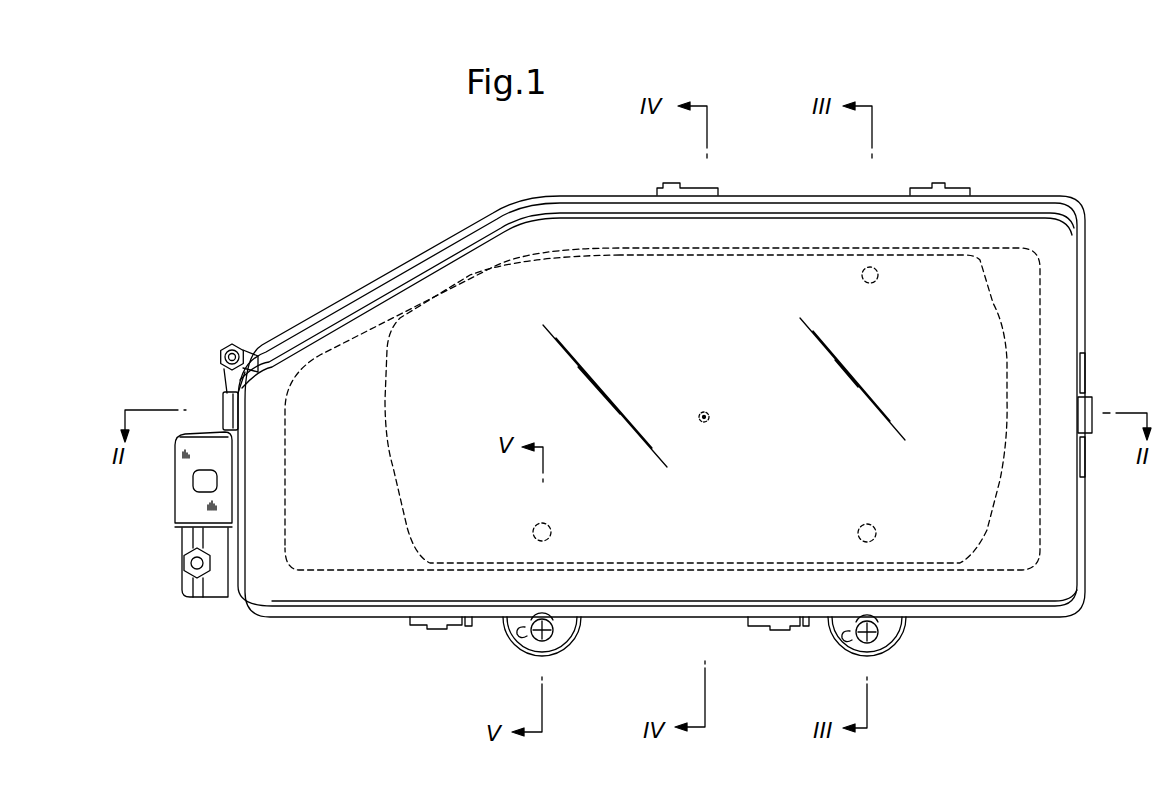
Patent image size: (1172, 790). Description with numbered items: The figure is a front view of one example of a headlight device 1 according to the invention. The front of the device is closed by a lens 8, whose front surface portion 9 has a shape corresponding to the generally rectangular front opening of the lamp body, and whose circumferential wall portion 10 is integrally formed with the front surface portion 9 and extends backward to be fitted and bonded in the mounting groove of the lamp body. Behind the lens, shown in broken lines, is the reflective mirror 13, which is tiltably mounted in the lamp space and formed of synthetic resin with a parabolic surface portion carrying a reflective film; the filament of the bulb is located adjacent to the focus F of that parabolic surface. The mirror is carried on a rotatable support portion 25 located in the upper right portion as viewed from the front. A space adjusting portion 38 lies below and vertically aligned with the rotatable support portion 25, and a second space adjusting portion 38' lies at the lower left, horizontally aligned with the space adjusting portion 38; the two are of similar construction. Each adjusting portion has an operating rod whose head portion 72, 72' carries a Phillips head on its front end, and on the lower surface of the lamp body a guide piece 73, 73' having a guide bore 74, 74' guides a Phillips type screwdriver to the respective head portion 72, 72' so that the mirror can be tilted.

The headlight device 1 is at (1018, 158).
The lens 8 is at (673, 537).
The front surface portion 9 is at (638, 537).
The circumferential wall portion 10 is at (1083, 262).
The reflective mirror 13 is at (1042, 320).
The rotatable support portion 25 is at (863, 284).
The space adjusting portion 38 is at (881, 511).
The space adjusting portion 38' is at (566, 512).
The head portion 72 is at (894, 655).
The head portion 72' is at (558, 662).
The guide piece 73 is at (891, 641).
The guide piece 73' is at (553, 648).
The guide bore 74 is at (824, 660).
The guide bore 74' is at (493, 652).
The focus F is at (707, 410).